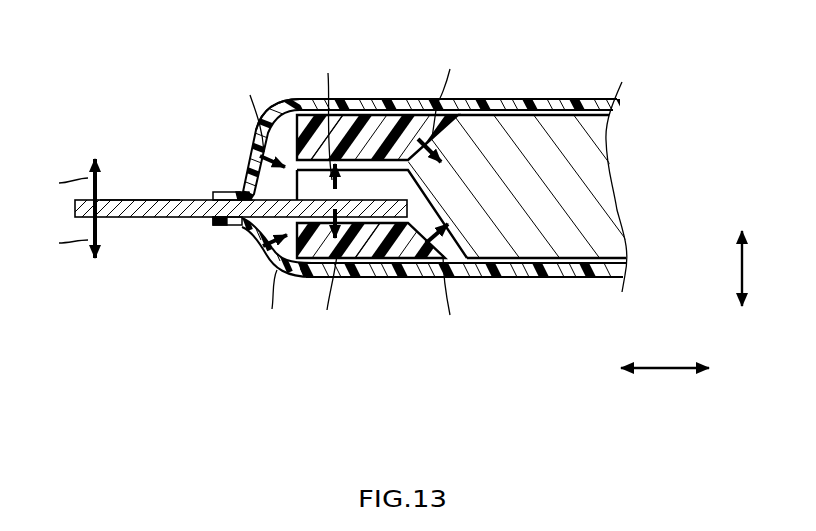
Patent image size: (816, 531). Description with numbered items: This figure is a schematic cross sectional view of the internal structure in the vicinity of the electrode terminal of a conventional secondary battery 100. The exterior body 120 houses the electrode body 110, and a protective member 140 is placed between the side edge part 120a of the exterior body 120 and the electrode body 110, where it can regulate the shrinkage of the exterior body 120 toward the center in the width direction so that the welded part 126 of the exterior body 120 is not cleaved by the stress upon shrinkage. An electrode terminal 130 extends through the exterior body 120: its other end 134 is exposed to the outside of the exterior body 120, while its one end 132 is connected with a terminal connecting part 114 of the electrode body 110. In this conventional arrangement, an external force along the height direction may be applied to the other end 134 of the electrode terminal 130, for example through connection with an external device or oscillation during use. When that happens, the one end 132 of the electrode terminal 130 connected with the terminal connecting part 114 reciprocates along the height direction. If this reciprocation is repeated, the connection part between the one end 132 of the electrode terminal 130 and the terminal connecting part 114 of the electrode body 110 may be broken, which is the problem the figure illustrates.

The secondary battery 100 is at (66, 82).
The electrode body 110 is at (588, 100).
The terminal connecting part 114 is at (372, 146).
The exterior body 120 is at (514, 93).
The side edge part 120a is at (255, 149).
The welded part 126 is at (220, 192).
The electrode terminal 130 is at (132, 221).
The one end of the electrode terminal 132 is at (271, 100).
The other end of the electrode terminal 134 is at (140, 200).
The protective member 140 is at (334, 146).